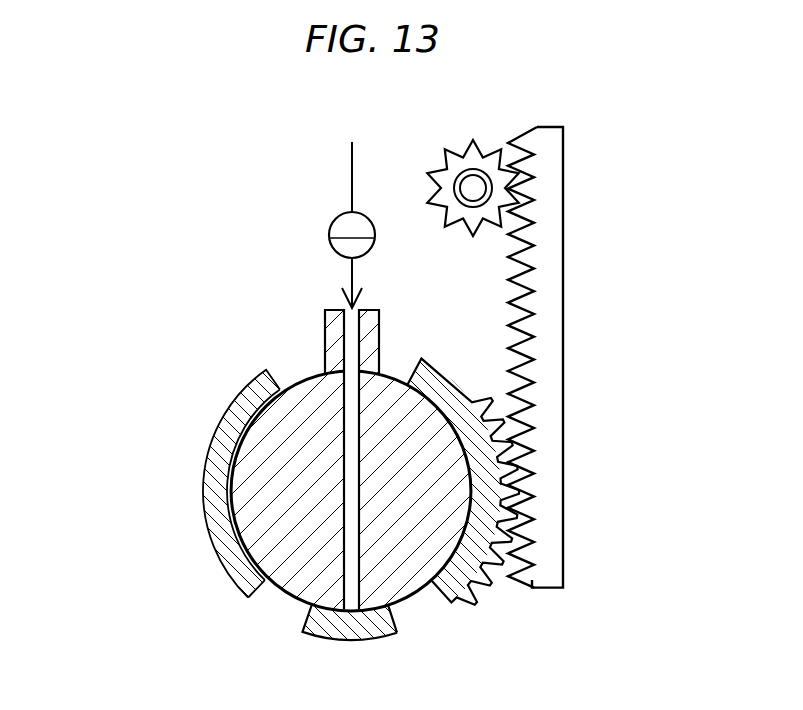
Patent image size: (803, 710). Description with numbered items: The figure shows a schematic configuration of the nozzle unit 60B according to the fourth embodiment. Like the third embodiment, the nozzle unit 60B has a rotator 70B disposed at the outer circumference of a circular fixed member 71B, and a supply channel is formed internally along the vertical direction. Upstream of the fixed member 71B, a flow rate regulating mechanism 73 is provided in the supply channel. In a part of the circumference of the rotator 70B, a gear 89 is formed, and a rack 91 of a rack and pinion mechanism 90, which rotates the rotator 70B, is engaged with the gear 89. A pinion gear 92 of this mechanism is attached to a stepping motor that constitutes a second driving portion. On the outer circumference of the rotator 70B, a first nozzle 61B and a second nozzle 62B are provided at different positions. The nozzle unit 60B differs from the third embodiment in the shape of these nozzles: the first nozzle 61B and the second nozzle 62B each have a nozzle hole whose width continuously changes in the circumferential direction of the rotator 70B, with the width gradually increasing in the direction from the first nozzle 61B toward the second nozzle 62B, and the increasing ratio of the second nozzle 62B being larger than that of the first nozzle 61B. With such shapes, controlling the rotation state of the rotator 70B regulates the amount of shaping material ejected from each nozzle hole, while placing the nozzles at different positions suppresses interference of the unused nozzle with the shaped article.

The nozzle unit 60B is at (110, 215).
The first nozzle 61B is at (272, 619).
The second nozzle 62B is at (424, 622).
The rotator 70B is at (216, 437).
The fixed member 71B is at (235, 520).
The flow rate regulating mechanism 73 is at (330, 226).
The gear 89 is at (492, 398).
The rack and pinion mechanism 90 is at (624, 372).
The rack 91 is at (548, 590).
The pinion gear 92 is at (447, 151).